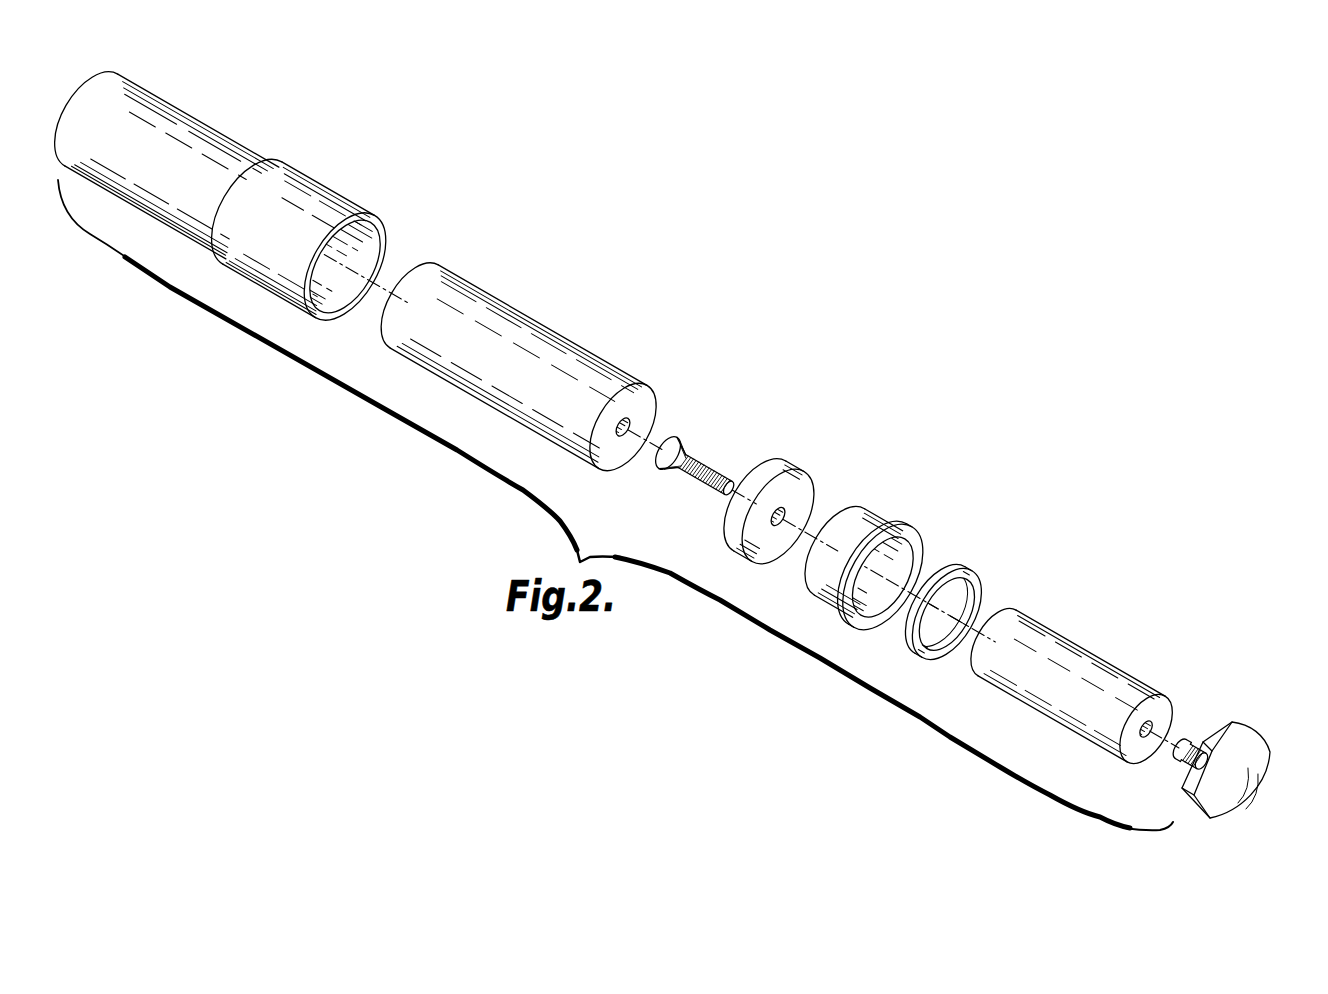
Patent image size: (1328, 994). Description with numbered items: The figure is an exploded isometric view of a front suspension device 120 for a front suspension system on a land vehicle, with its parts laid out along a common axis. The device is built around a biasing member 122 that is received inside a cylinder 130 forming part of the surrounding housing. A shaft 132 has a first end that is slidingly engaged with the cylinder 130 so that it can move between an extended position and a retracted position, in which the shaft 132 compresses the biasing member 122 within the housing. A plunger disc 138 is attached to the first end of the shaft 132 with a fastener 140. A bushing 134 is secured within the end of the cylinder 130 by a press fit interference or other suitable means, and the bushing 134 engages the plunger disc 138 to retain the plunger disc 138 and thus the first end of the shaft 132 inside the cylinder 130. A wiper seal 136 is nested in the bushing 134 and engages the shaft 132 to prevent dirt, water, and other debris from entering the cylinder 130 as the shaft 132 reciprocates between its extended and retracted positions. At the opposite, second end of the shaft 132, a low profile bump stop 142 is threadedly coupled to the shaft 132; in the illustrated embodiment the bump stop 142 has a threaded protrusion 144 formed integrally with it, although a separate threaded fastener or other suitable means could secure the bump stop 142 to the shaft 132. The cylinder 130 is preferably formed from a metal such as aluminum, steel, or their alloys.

The front suspension device 120 is at (767, 299).
The biasing member 122 is at (540, 330).
The cylinder 130 is at (205, 124).
The shaft 132 is at (1090, 654).
The bushing 134 is at (878, 516).
The wiper seal 136 is at (958, 570).
The plunger disc 138 is at (790, 466).
The fastener 140 is at (704, 464).
The bump stop 142 is at (1242, 728).
The threaded protrusion 144 is at (1192, 738).